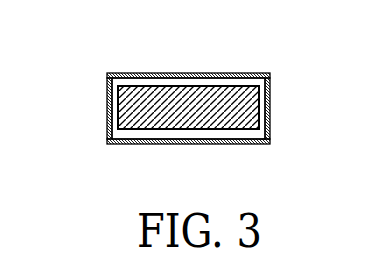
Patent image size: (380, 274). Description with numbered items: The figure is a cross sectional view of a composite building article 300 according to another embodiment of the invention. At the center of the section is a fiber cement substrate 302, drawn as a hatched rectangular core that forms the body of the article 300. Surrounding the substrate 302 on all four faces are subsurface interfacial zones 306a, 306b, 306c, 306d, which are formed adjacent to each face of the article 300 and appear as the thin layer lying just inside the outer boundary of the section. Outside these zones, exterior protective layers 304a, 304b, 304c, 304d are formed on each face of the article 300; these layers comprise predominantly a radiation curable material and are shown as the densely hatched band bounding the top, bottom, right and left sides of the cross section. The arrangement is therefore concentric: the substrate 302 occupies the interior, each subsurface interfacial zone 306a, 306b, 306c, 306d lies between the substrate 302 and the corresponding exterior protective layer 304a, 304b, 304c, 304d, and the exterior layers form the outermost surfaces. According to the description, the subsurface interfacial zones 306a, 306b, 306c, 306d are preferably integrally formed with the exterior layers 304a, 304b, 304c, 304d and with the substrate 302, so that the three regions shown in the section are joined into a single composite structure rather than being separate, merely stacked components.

The composite building article 300 is at (247, 50).
The fiber cement substrate 302 is at (203, 118).
The exterior protective layer 304a is at (197, 74).
The exterior protective layer 304b is at (248, 142).
The exterior protective layer 304c is at (270, 88).
The exterior protective layer 304d is at (107, 90).
The subsurface interfacial zone 306a is at (140, 77).
The subsurface interfacial zone 306b is at (128, 140).
The subsurface interfacial zone 306c is at (262, 115).
The subsurface interfacial zone 306d is at (116, 118).